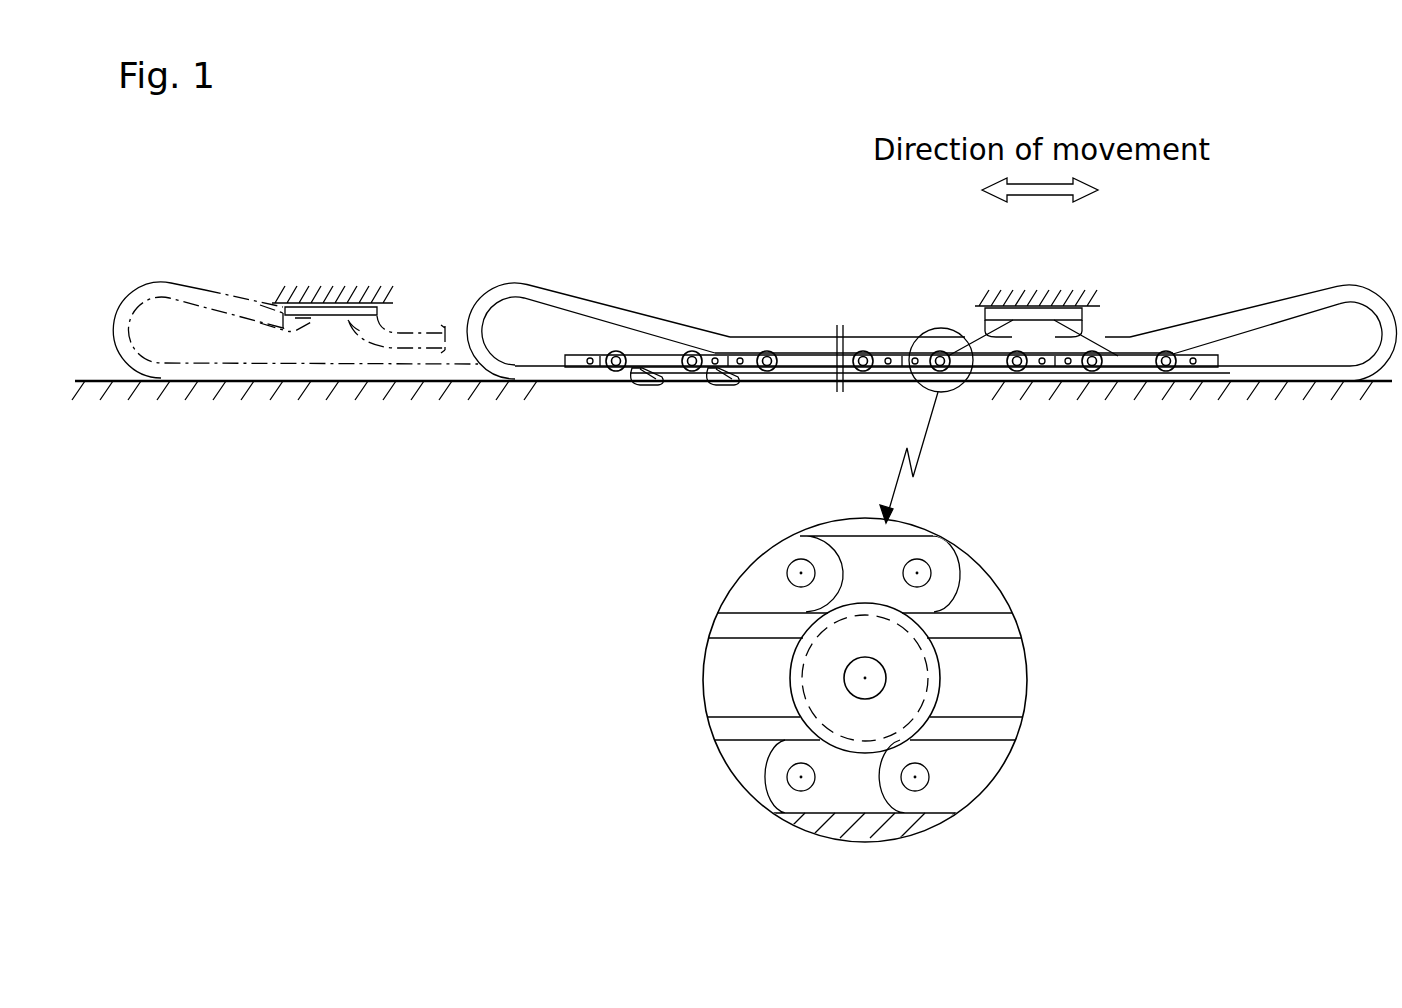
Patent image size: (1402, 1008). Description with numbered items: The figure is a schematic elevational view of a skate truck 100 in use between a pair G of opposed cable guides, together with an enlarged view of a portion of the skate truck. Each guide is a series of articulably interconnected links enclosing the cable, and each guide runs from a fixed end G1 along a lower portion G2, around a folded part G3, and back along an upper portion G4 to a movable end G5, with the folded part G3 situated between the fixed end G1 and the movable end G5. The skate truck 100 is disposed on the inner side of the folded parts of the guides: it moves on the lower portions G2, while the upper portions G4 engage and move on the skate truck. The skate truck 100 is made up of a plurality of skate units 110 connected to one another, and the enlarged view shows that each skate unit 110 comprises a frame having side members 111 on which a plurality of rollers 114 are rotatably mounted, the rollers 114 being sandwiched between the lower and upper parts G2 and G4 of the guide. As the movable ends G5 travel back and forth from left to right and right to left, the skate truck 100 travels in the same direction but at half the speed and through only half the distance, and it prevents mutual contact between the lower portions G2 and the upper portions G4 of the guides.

The pair of opposed cable guides G is at (628, 222).
The fixed end G1 is at (648, 383).
The lower portion G2 is at (553, 373).
The folded part G3 is at (115, 318).
The upper portion G4 is at (748, 340).
The movable end G5 is at (985, 332).
The skate truck 100 is at (1215, 478).
The skate unit 110 is at (627, 373).
The side member 111 is at (1012, 700).
The roller 114 is at (943, 683).